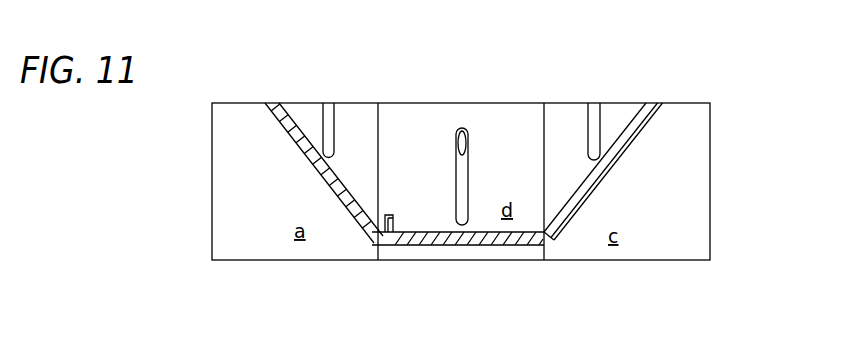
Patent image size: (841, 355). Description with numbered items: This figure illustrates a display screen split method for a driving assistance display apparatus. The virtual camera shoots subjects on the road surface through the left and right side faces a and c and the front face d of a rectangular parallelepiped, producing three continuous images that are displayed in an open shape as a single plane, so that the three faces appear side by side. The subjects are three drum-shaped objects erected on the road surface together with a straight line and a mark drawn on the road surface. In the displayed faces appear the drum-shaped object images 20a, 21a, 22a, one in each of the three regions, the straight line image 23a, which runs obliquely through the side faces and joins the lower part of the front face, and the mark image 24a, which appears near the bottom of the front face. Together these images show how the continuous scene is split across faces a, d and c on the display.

The drum-shaped object image 20a is at (327, 108).
The drum-shaped object image 21a is at (462, 128).
The drum-shaped object image 22a is at (594, 108).
The straight line image 23a is at (300, 141).
The mark image 24a is at (393, 217).